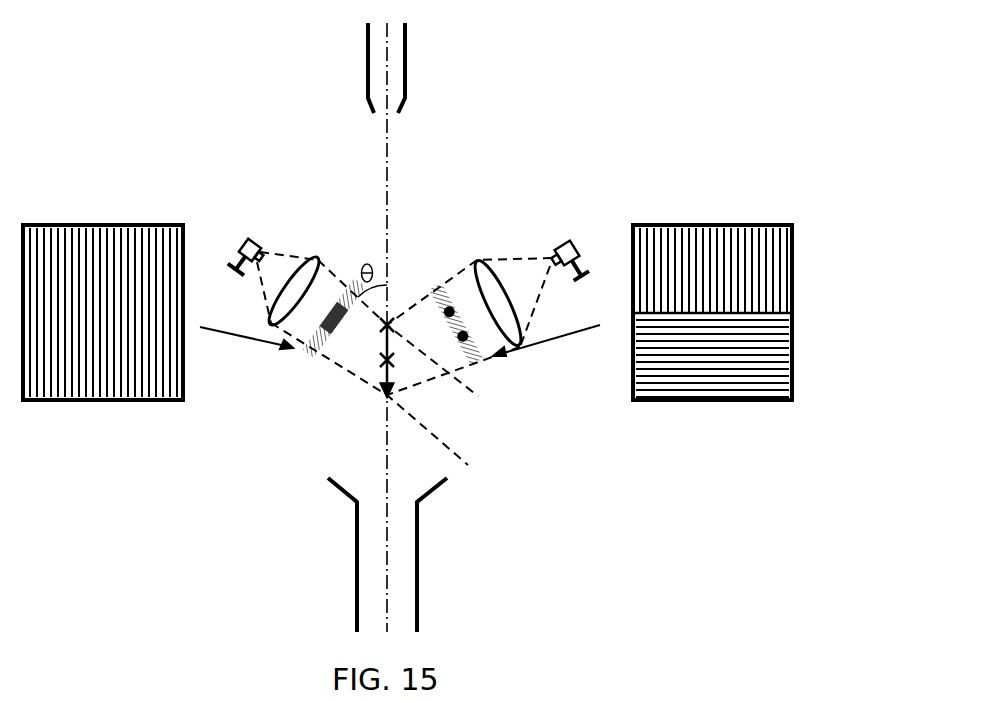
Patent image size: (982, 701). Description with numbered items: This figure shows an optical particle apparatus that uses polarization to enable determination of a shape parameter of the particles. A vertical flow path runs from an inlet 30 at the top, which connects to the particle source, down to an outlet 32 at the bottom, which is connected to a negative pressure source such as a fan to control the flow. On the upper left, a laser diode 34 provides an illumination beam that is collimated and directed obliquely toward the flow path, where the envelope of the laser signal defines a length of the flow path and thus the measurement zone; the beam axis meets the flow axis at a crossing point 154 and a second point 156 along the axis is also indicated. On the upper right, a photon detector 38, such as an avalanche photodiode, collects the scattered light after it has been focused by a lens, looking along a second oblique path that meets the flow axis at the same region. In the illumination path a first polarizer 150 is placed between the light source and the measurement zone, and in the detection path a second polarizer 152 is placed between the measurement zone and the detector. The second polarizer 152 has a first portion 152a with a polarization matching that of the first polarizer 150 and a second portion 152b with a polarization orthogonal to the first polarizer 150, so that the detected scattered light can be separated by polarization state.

The inlet 30 is at (407, 80).
The outlet 32 is at (418, 587).
The laser diode 34 is at (247, 226).
The photon detector 38 is at (567, 242).
The first grating / detector array 150 is at (103, 278).
The second grating / detector array 152 is at (753, 278).
The first region of element 152 with vertical stripes 152a is at (763, 285).
The second region of element 152 with horizontal stripes 152b is at (777, 362).
The beam crossing point on axis 154 is at (413, 322).
The lower beam crossing point / measurement volume 156 is at (384, 396).